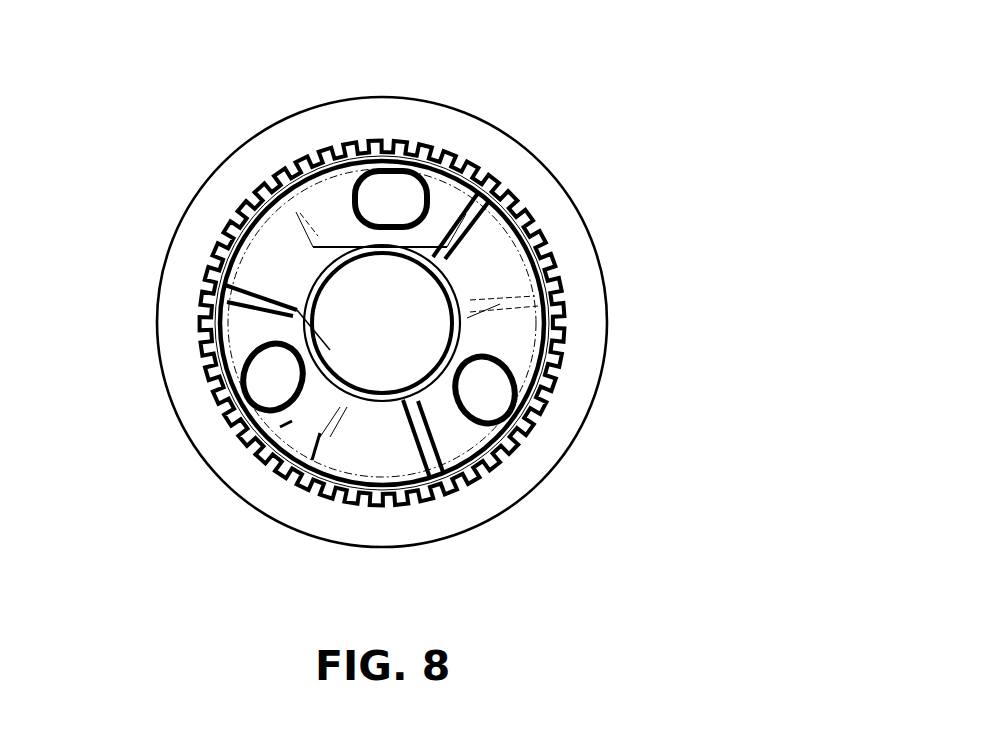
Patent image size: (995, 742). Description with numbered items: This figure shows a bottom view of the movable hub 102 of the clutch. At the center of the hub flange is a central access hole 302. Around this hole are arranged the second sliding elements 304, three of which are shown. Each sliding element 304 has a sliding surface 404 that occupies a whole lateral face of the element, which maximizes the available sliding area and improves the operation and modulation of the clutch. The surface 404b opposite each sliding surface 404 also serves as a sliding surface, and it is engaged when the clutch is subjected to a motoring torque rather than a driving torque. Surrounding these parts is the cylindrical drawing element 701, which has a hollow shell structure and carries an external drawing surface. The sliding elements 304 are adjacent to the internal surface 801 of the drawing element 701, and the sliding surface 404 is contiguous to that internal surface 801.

The movable hub 102 is at (684, 127).
The central access hole 302 is at (386, 330).
The sliding elements 304 is at (447, 207).
The sliding surface 404 is at (249, 298).
The opposite surface 404b is at (277, 185).
The cylindrical drawing element 701 is at (558, 405).
The internal surface 801 is at (526, 277).